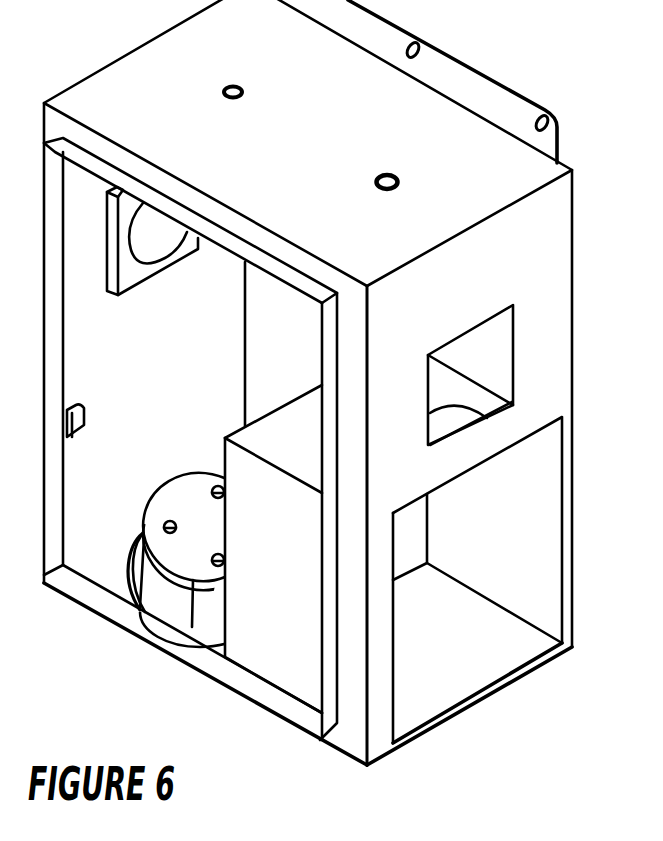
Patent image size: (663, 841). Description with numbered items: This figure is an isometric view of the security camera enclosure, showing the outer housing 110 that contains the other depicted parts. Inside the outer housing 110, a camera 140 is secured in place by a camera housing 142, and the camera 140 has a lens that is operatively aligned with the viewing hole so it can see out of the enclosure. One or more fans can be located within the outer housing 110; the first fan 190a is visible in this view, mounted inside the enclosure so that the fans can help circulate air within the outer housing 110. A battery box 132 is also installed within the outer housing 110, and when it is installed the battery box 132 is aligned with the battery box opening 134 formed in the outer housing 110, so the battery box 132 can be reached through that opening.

The outer housing 110 is at (137, 50).
The first fan 190a is at (173, 255).
The camera housing 142 is at (180, 500).
The camera 140 is at (160, 595).
The battery box 132 is at (252, 652).
The battery box opening 134 is at (520, 661).